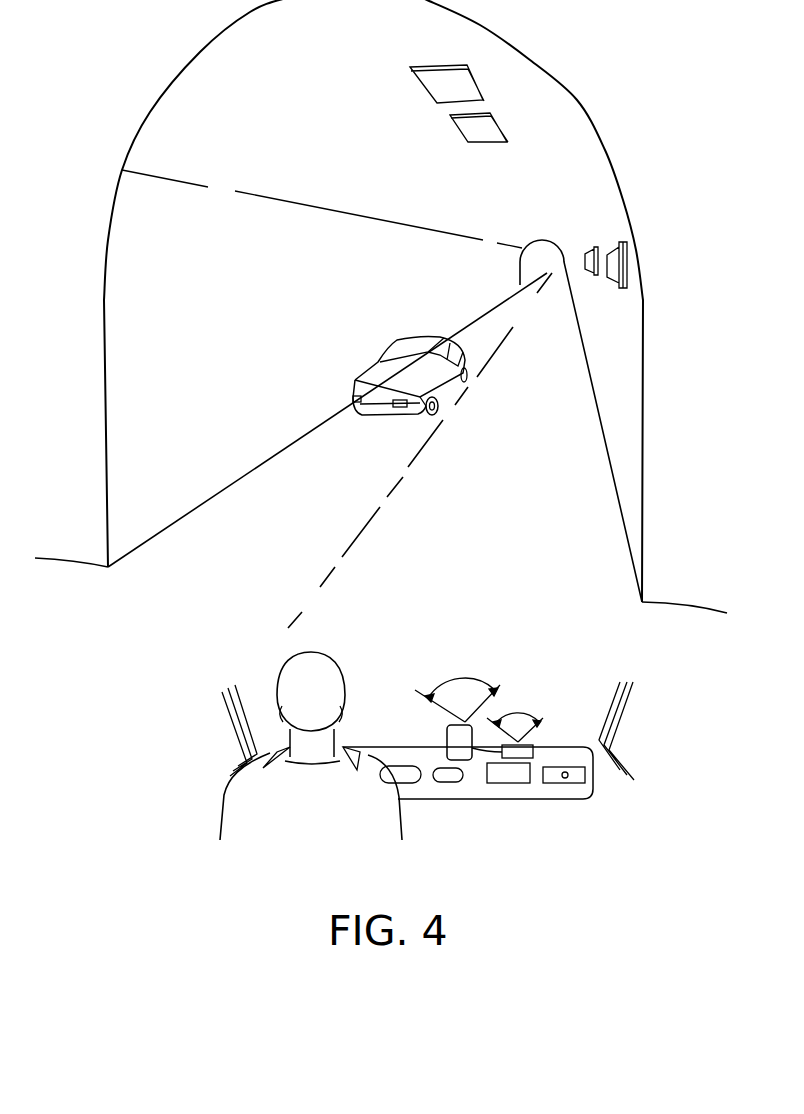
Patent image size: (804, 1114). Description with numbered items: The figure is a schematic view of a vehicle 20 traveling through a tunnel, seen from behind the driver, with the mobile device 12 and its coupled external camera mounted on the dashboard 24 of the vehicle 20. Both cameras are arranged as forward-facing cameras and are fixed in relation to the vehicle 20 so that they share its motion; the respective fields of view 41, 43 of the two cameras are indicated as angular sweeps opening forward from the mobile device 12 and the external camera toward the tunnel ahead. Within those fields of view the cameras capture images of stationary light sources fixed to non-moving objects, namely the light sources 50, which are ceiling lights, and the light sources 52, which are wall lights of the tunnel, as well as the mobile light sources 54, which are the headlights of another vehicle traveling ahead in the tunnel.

The mobile device 12 is at (447, 735).
The vehicle 20 is at (597, 786).
The dashboard 24 is at (537, 798).
The field of view 41 is at (458, 677).
The field of view 43 is at (520, 712).
The light sources 50 is at (483, 86).
The light sources 52 is at (584, 258).
The mobile light sources 54 is at (355, 406).